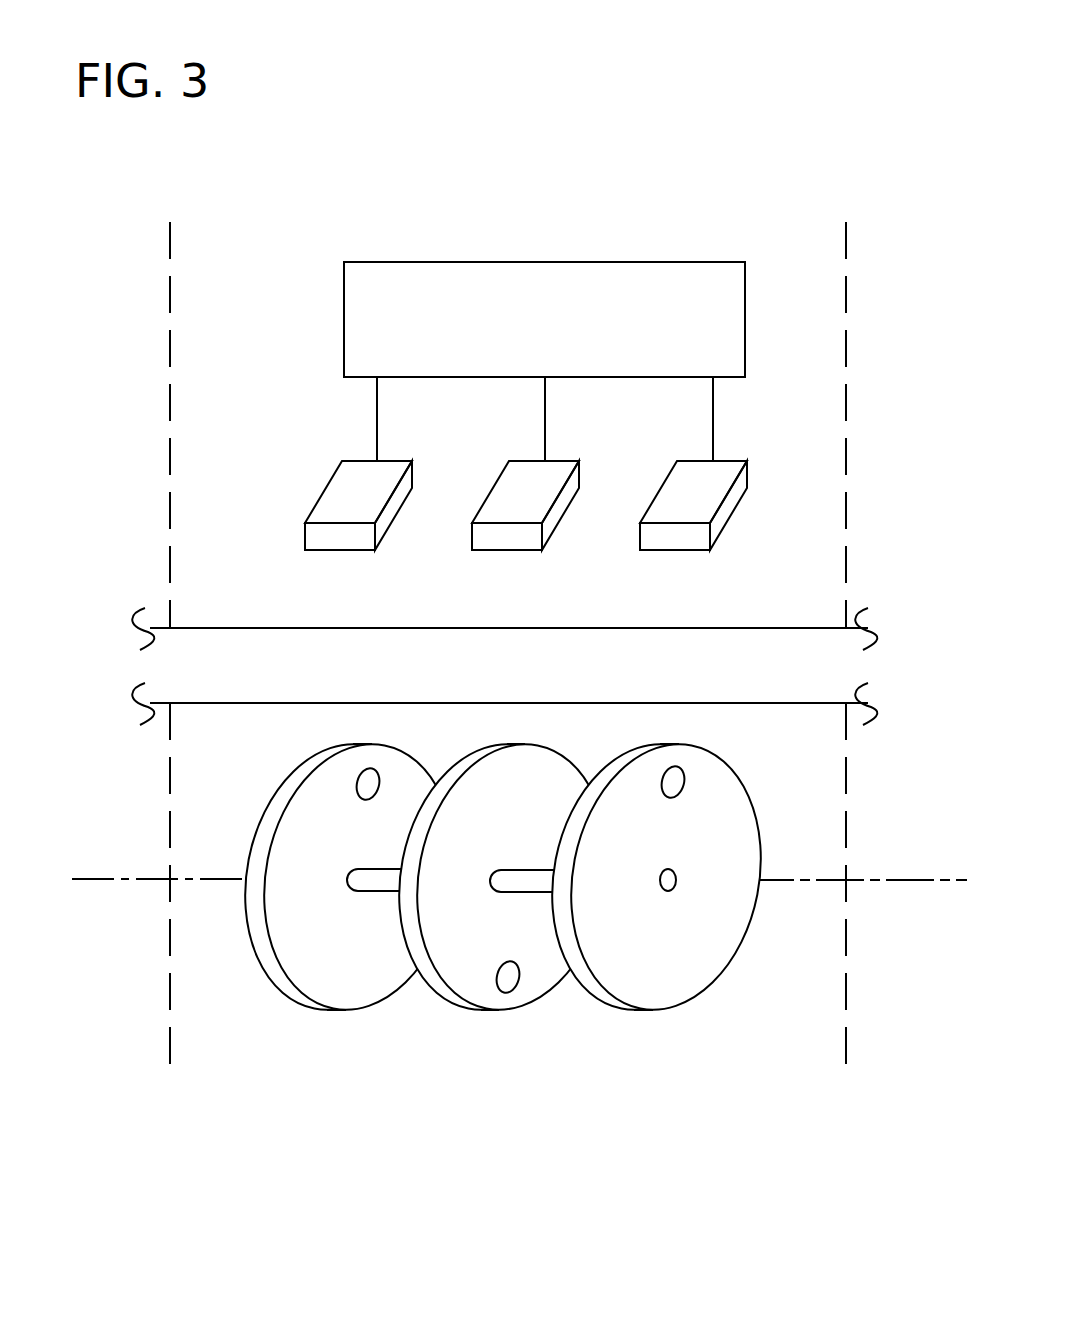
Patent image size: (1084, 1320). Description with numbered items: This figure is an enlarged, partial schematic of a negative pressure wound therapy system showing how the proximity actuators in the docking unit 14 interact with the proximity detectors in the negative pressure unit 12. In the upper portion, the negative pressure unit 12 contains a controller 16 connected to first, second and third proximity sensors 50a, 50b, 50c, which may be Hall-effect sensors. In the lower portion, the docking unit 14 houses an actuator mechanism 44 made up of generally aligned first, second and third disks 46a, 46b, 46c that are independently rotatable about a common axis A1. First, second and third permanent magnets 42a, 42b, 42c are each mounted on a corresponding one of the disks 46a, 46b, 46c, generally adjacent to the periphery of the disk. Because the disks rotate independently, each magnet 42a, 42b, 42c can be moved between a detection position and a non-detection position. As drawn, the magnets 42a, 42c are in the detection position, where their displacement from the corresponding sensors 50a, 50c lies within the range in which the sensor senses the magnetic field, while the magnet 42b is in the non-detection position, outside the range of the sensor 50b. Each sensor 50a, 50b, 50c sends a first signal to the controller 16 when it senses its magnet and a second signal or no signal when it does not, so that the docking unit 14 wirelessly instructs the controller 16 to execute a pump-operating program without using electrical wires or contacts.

The negative pressure unit 12 is at (850, 343).
The docking unit 14 is at (862, 1054).
The controller 16 is at (528, 266).
The actuator mechanism 44 is at (225, 1075).
The first disk 46a is at (350, 998).
The second disk 46b is at (475, 990).
The third disk 46c is at (683, 972).
The first permanent magnet 42a is at (367, 790).
The second permanent magnet 42b is at (517, 987).
The third permanent magnet 42c is at (673, 785).
The first proximity sensor 50a is at (333, 540).
The second proximity sensor 50b is at (522, 542).
The third proximity sensor 50c is at (737, 495).
The common axis A1 is at (940, 882).